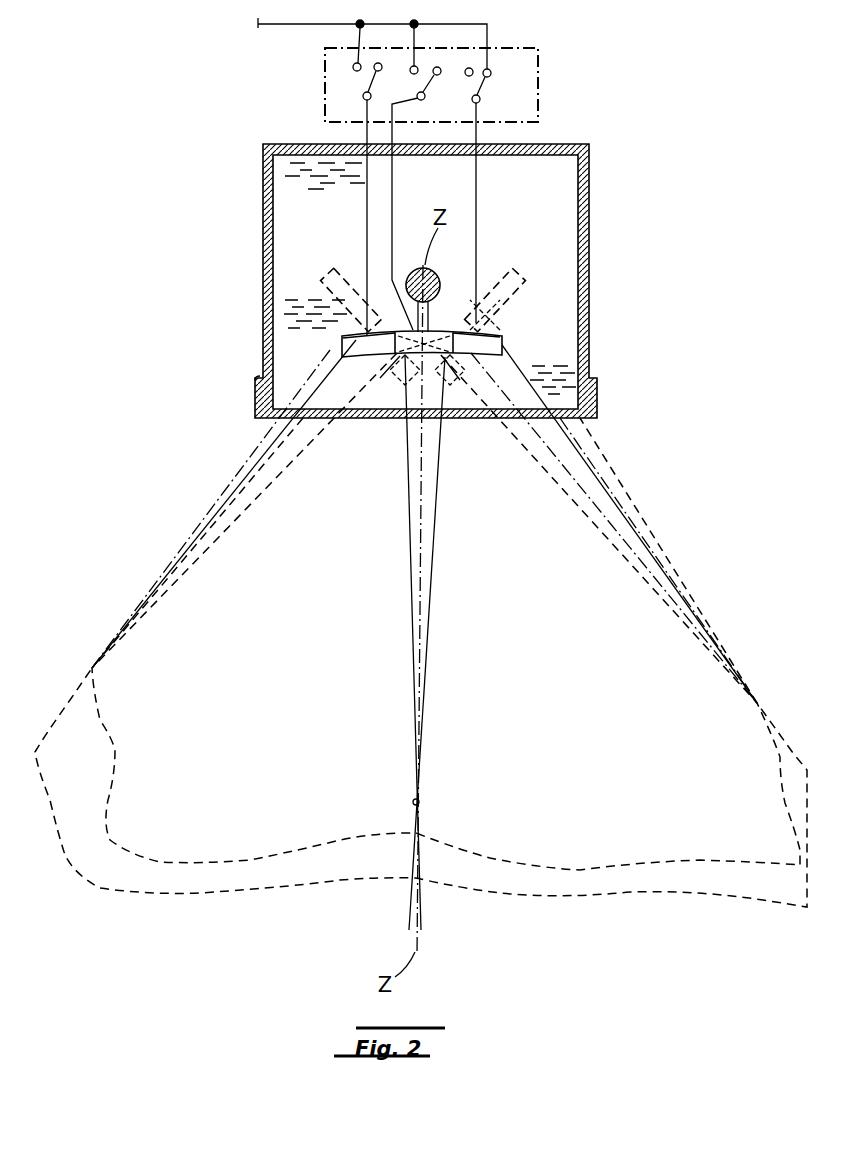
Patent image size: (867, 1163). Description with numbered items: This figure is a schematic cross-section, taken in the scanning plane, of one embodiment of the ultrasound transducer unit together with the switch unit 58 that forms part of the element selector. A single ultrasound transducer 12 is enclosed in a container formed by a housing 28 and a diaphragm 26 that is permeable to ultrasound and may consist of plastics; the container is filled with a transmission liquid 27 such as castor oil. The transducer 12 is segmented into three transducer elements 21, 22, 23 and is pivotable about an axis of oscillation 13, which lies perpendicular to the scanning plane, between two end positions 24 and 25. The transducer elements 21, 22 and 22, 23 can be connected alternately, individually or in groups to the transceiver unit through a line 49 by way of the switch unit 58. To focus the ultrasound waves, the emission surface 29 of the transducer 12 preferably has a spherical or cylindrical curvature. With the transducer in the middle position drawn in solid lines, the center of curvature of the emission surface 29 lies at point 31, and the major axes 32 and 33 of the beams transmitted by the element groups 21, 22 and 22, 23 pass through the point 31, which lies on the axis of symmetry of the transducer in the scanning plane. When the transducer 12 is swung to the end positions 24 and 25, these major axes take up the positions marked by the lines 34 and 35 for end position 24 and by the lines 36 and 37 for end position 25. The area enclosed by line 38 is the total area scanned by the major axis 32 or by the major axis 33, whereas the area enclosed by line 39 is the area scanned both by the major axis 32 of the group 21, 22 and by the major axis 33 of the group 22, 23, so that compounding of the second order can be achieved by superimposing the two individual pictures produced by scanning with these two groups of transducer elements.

The ultrasound transducer 12 is at (503, 342).
The axis of oscillation 13 is at (440, 272).
The transducer element 21 is at (342, 340).
The transducer element 22 is at (490, 318).
The transducer element 23 is at (455, 333).
The end position 24 is at (322, 288).
The end position 25 is at (524, 286).
The diaphragm 26 is at (524, 411).
The transmission liquid 27 is at (320, 305).
The housing 28 is at (589, 160).
The emission surface 29 is at (397, 356).
The center of curvature 31 is at (420, 800).
The major axis 32 is at (410, 556).
The major axis 33 is at (435, 565).
The line 34 is at (257, 393).
The line 35 is at (293, 447).
The line 36 is at (583, 507).
The line 37 is at (583, 460).
The line 38 is at (215, 550).
The line 39 is at (185, 585).
The line 49 is at (278, 24).
The switch unit 58 is at (538, 52).